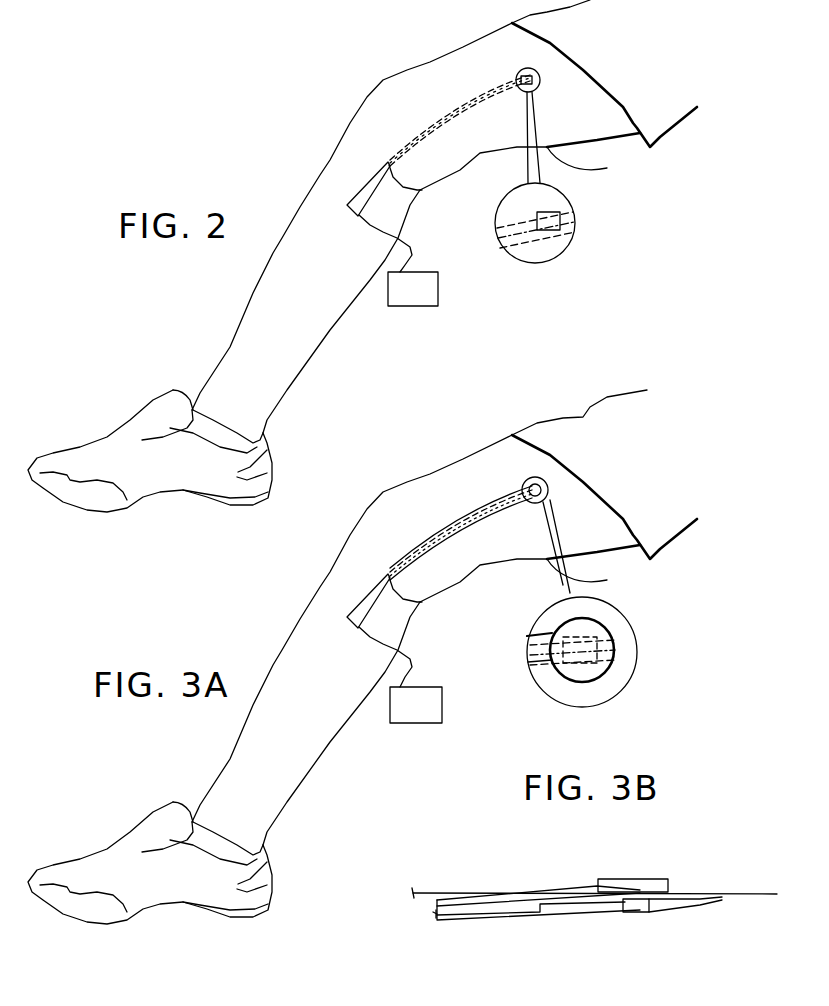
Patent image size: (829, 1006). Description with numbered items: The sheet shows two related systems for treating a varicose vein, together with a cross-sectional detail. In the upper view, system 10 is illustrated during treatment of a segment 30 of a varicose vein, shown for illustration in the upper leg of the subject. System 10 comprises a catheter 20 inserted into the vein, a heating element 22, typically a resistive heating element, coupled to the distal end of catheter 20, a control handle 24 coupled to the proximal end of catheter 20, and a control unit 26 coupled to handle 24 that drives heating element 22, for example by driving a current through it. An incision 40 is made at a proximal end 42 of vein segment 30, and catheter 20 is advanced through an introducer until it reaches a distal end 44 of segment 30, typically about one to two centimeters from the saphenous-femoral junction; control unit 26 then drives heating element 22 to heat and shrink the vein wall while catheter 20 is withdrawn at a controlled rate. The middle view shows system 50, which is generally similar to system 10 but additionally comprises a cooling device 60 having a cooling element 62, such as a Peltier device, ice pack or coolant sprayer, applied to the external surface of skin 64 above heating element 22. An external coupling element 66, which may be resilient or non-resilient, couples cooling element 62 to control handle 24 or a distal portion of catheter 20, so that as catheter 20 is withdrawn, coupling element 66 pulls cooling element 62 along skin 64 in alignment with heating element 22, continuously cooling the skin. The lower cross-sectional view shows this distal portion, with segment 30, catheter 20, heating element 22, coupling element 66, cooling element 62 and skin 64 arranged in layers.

In FIG. 2, the system 10 is at (446, 103).
In FIG. 2, the catheter 20 is at (473, 100).
In FIG. 3A, the catheter 20 is at (477, 513).
In FIG. 3B, the catheter 20 is at (545, 913).
In FIG. 2, the heating element 22 is at (535, 73).
In FIG. 3A, the heating element 22 is at (593, 690).
In FIG. 3B, the heating element 22 is at (633, 913).
In FIG. 2, the control handle 24 is at (360, 190).
In FIG. 3A, the control handle 24 is at (360, 602).
In FIG. 2, the control unit 26 is at (438, 291).
In FIG. 3A, the control unit 26 is at (442, 707).
In FIG. 2, the segment 30 is at (493, 78).
In FIG. 3A, the segment 30 is at (497, 503).
In FIG. 3B, the segment 30 is at (468, 921).
In FIG. 2, the incision 40 is at (388, 162).
In FIG. 3A, the incision 40 is at (388, 574).
In FIG. 2, the proximal end 42 is at (424, 192).
In FIG. 3A, the proximal end 42 is at (424, 604).
In FIG. 2, the distal end 44 is at (541, 83).
In FIG. 3A, the system 50 is at (447, 517).
In FIG. 3A, the cooling device 60 is at (436, 547).
In FIG. 3A, the cooling element 62 is at (532, 477).
In FIG. 3B, the cooling element 62 is at (645, 878).
In FIG. 3B, the skin 64 is at (708, 892).
In FIG. 3A, the external coupling element 66 is at (427, 544).
In FIG. 3B, the external coupling element 66 is at (468, 892).